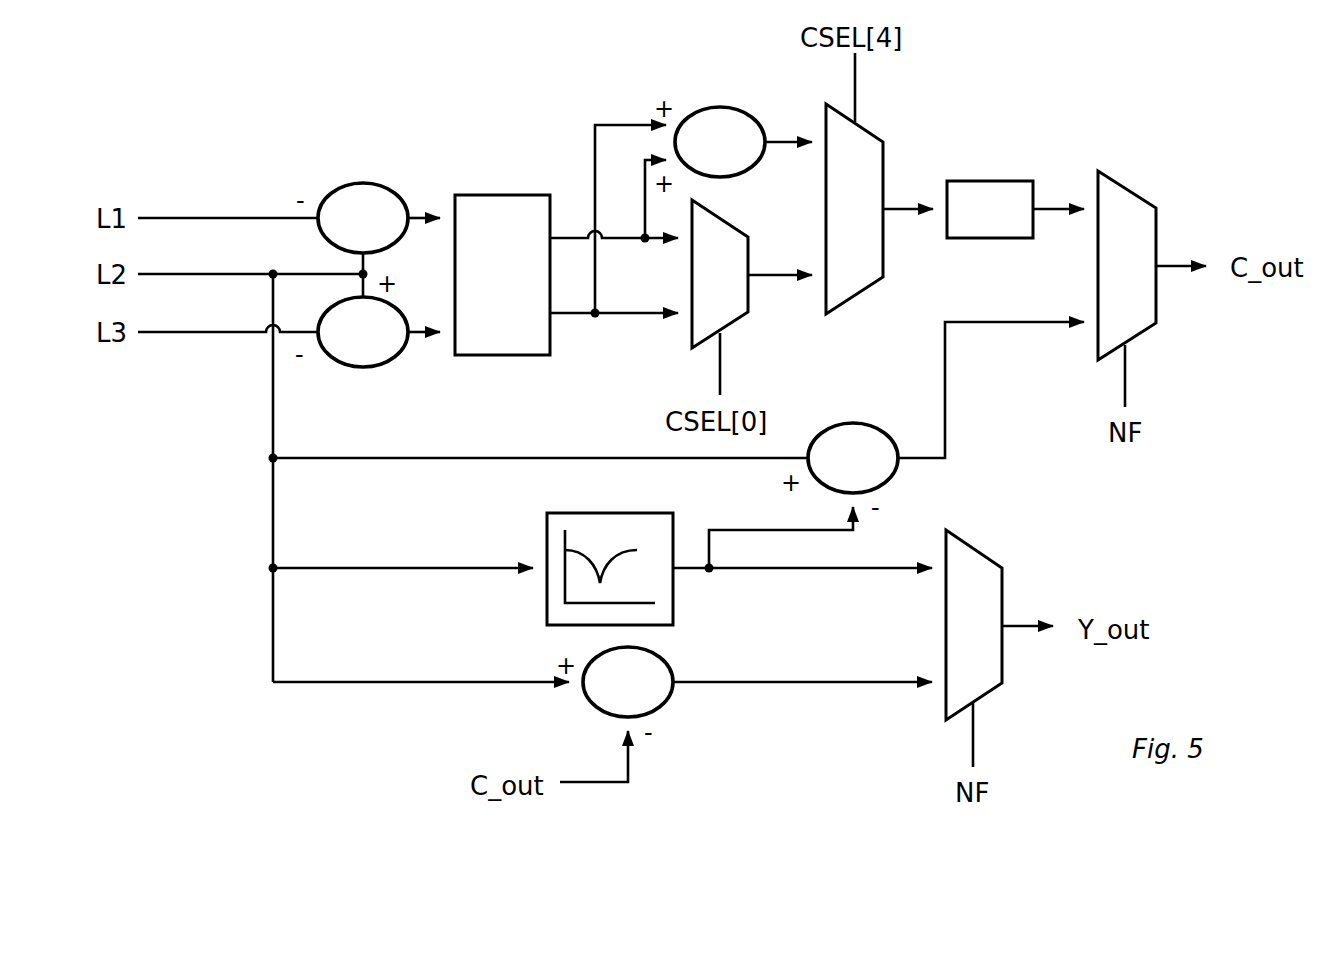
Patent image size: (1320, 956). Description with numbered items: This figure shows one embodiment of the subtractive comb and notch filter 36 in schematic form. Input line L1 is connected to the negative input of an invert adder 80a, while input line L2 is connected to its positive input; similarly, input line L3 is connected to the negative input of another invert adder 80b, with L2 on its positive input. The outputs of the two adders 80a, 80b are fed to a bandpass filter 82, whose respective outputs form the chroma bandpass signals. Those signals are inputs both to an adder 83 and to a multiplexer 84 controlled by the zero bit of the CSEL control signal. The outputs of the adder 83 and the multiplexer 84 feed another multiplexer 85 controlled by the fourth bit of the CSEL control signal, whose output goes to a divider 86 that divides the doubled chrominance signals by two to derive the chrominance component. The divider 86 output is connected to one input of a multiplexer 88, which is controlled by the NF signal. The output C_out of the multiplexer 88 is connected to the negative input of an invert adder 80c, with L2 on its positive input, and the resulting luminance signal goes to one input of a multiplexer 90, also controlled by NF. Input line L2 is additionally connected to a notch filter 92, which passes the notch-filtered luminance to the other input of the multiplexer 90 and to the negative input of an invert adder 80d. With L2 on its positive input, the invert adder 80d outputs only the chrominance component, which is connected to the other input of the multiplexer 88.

The subtractive comb and notch filter 36 is at (232, 149).
The invert adder 80a is at (402, 190).
The invert adder 80b is at (328, 360).
The invert adder 80c is at (588, 712).
The invert adder 80d is at (890, 437).
The bandpass filter 82 is at (518, 195).
The adder 83 is at (755, 112).
The multiplexer 84 is at (749, 247).
The multiplexer 85 is at (883, 150).
The divider 86 is at (1003, 181).
The multiplexer 88 is at (1156, 222).
The multiplexer 90 is at (1002, 580).
The notch filter 92 is at (645, 513).